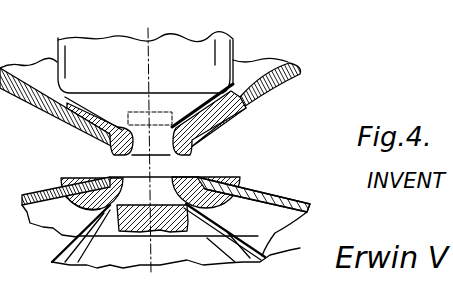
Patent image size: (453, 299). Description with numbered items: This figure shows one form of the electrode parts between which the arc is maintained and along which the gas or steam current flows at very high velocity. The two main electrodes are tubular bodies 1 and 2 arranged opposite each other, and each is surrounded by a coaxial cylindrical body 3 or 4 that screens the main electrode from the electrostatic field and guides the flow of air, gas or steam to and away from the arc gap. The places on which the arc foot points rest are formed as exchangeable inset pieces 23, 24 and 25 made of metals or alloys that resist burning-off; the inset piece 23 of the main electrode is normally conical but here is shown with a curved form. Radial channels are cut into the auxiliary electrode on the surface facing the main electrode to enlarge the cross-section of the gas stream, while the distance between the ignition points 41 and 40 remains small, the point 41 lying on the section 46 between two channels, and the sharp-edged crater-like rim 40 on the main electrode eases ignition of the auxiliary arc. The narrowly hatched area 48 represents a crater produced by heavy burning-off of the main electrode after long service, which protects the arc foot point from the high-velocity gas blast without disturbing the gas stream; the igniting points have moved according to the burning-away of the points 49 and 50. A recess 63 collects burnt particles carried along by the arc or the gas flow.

The tubular body 1 is at (266, 254).
The tubular body 2 is at (93, 50).
The coaxial cylindrical body 3 is at (285, 195).
The coaxial cylindrical body 4 is at (303, 75).
The inset piece 23 is at (273, 100).
The inset piece 24 is at (196, 177).
The inset piece 25 is at (236, 130).
The crater-like rim 40 is at (66, 186).
The ignition point 41 is at (107, 180).
The section between two channels 46 is at (223, 179).
The narrowly hatched area 48 is at (205, 210).
The burnt-away point 49 is at (72, 205).
The burnt-away point 50 is at (107, 215).
The recess 63 is at (165, 122).